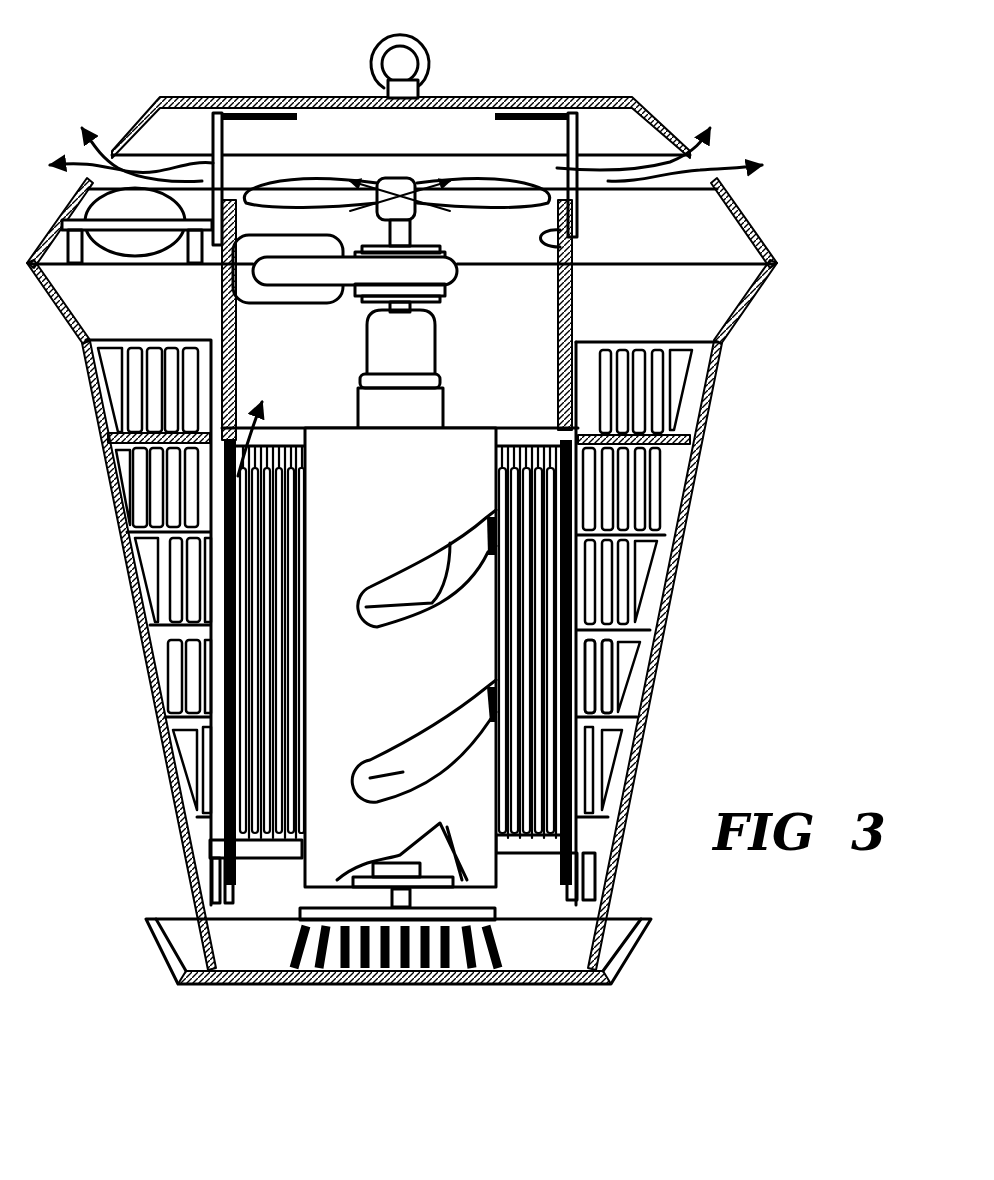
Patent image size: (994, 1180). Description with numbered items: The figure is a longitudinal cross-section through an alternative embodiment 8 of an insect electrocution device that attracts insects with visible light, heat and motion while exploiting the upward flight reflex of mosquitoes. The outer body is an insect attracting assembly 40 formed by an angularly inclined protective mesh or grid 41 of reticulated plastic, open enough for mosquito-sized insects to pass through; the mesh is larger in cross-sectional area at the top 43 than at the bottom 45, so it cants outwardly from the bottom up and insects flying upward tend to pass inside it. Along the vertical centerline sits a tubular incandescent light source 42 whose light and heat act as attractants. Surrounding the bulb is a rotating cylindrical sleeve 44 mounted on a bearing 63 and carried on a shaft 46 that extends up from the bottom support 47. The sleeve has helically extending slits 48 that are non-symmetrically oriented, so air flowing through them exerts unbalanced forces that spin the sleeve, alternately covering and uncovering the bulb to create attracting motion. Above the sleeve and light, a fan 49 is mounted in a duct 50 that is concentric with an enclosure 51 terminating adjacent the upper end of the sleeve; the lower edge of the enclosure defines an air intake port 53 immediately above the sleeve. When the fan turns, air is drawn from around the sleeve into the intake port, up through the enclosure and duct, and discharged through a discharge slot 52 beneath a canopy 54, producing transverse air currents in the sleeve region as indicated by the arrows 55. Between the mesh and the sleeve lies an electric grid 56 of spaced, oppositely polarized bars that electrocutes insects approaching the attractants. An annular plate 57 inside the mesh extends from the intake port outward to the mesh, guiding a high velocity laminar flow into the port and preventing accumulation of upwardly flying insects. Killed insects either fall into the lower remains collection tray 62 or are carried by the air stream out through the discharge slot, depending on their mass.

The alternative embodiment 8 is at (147, 68).
The insect attracting assembly 40 is at (200, 656).
The protective wire mesh or grid 41 is at (623, 685).
The light source 42 is at (437, 403).
The top 43 is at (748, 347).
The rotating cylindrical sleeve 44 is at (342, 424).
The bottom 45 is at (625, 900).
The shaft 46 is at (392, 897).
The bottom support 47 is at (513, 947).
The slits 48 is at (405, 590).
The fan 49 is at (493, 193).
The duct 50 is at (558, 247).
The enclosure 51 is at (568, 302).
The discharge slot 52 is at (714, 157).
The air intake port 53 is at (217, 476).
The canopy 54 is at (658, 98).
The arrows 55 is at (783, 493).
The electric grid 56 is at (245, 842).
The annular plate 57 is at (143, 430).
The remains collection tray 62 is at (643, 943).
The bearing 63 is at (395, 856).